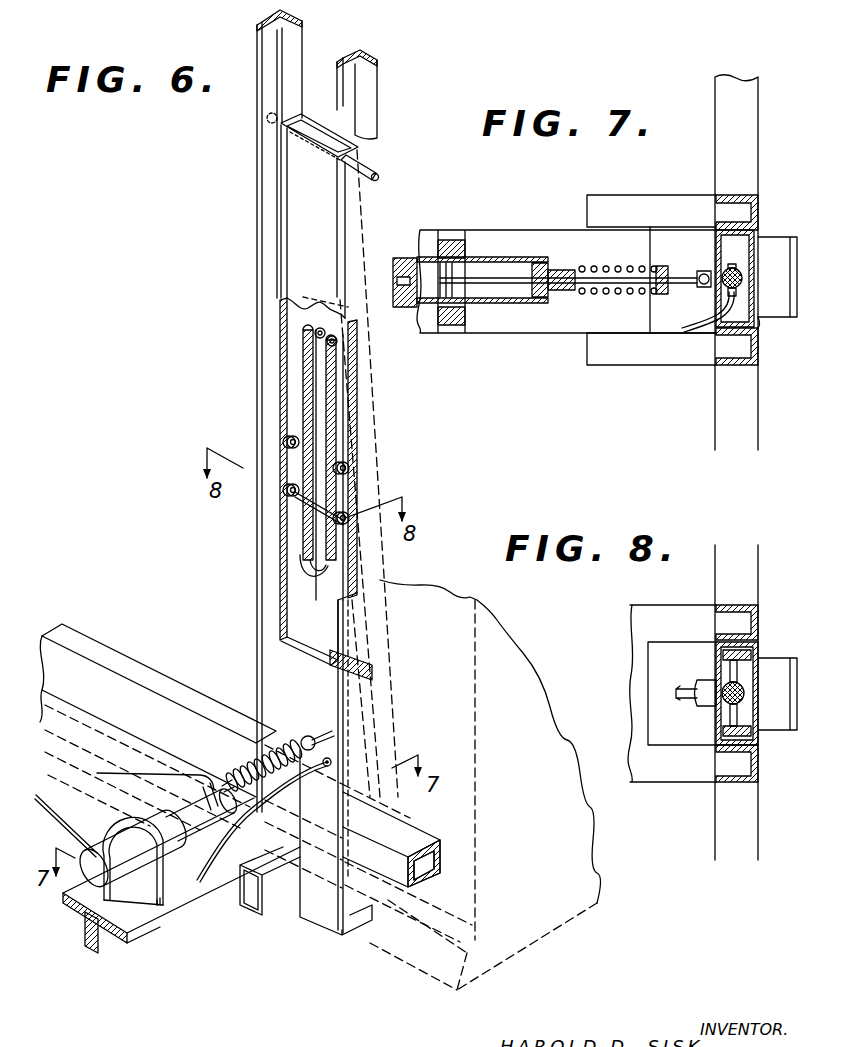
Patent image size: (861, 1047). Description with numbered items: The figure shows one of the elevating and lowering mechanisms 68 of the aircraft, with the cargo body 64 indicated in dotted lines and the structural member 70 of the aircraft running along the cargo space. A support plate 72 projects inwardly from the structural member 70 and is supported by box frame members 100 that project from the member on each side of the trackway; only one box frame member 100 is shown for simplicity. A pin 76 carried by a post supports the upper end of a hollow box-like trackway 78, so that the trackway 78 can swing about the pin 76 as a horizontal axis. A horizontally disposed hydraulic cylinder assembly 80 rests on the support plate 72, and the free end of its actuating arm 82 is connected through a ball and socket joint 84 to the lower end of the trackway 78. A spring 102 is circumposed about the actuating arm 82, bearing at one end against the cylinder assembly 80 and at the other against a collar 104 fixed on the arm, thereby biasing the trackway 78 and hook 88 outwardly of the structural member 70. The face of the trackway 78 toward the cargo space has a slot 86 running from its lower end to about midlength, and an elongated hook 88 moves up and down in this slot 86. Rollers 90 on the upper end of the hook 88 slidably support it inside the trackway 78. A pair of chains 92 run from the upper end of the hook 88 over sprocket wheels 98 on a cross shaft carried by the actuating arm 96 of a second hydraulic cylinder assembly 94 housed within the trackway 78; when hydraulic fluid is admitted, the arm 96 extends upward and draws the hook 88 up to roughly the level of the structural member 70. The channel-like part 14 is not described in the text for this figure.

In FIG. 6, the channel member 14 is at (298, 68).
In FIG. 7, the channel member 14 is at (763, 207).
In FIG. 8, the channel member 14 is at (760, 611).
In FIG. 6, the cargo body 64 is at (508, 958).
In FIG. 6, the elevating and lowering mechanism 68 is at (261, 580).
In FIG. 6, the structural member 70 is at (160, 678).
In FIG. 7, the structural member 70 is at (758, 151).
In FIG. 8, the structural member 70 is at (760, 559).
In FIG. 6, the support plate 72 is at (137, 913).
In FIG. 7, the support plate 72 is at (493, 323).
In FIG. 6, the pin 76 is at (369, 178).
In FIG. 6, the trackway 78 is at (365, 252).
In FIG. 7, the trackway 78 is at (716, 248).
In FIG. 8, the trackway 78 is at (716, 731).
In FIG. 6, the hydraulic cylinder assembly 80 is at (170, 815).
In FIG. 7, the hydraulic cylinder assembly 80 is at (492, 254).
In FIG. 6, the actuating arm 82 is at (267, 733).
In FIG. 7, the actuating arm 82 is at (553, 275).
In FIG. 8, the actuating arm 82 is at (680, 689).
In FIG. 6, the ball and socket joint 84 is at (317, 740).
In FIG. 7, the ball and socket joint 84 is at (703, 291).
In FIG. 8, the ball and socket joint 84 is at (704, 681).
In FIG. 7, the slot 86 is at (762, 320).
In FIG. 7, the hook 88 is at (777, 321).
In FIG. 8, the hook 88 is at (781, 658).
In FIG. 6, the rollers 90 is at (363, 480).
In FIG. 8, the rollers 90 is at (738, 648).
In FIG. 6, the chains 92 is at (340, 397).
In FIG. 6, the hydraulic cylinder assembly 94 is at (309, 619).
In FIG. 7, the hydraulic cylinder assembly 94 is at (731, 267).
In FIG. 8, the hydraulic cylinder assembly 94 is at (716, 674).
In FIG. 6, the actuating arm 96 is at (318, 430).
In FIG. 7, the actuating arm 96 is at (744, 280).
In FIG. 8, the actuating arm 96 is at (710, 704).
In FIG. 6, the sprocket wheels 98 is at (321, 302).
In FIG. 6, the box frame members 100 is at (275, 902).
In FIG. 7, the box frame members 100 is at (643, 204).
In FIG. 8, the box frame members 100 is at (663, 608).
In FIG. 7, the spring 102 is at (610, 262).
In FIG. 7, the collar 104 is at (670, 262).
In FIG. 8, the collar 104 is at (682, 693).